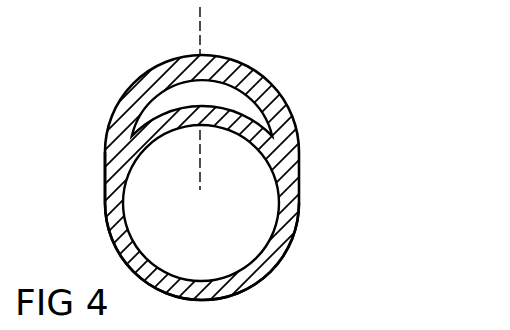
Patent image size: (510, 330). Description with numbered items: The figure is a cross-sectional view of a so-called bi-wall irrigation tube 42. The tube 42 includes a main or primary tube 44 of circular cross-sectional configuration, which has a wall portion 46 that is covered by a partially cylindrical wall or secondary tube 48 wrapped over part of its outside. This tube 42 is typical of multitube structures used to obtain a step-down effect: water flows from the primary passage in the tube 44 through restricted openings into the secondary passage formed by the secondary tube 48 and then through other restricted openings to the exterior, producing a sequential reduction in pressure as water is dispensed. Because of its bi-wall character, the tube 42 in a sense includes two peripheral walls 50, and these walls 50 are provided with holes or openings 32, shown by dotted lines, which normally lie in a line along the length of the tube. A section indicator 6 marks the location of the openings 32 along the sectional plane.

The irrigation tube 42 is at (72, 149).
The main or primary tube 44 is at (278, 266).
The wall portion 46 is at (141, 155).
The partially cylindrical wall or secondary tube 48 is at (278, 138).
The peripheral wall 50 is at (108, 230).
The holes or openings 32 is at (199, 55).
The section line 6- 6 is at (200, 20).